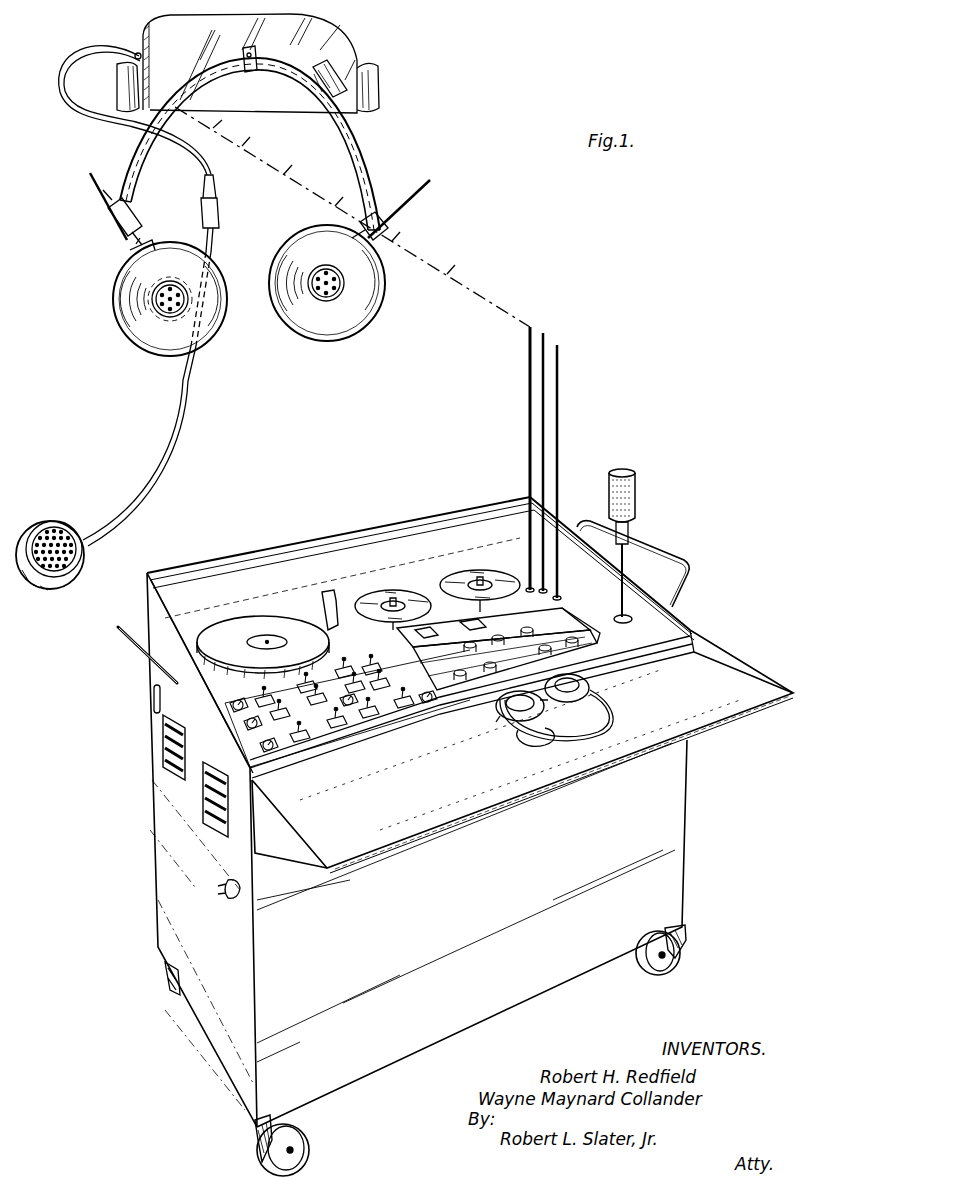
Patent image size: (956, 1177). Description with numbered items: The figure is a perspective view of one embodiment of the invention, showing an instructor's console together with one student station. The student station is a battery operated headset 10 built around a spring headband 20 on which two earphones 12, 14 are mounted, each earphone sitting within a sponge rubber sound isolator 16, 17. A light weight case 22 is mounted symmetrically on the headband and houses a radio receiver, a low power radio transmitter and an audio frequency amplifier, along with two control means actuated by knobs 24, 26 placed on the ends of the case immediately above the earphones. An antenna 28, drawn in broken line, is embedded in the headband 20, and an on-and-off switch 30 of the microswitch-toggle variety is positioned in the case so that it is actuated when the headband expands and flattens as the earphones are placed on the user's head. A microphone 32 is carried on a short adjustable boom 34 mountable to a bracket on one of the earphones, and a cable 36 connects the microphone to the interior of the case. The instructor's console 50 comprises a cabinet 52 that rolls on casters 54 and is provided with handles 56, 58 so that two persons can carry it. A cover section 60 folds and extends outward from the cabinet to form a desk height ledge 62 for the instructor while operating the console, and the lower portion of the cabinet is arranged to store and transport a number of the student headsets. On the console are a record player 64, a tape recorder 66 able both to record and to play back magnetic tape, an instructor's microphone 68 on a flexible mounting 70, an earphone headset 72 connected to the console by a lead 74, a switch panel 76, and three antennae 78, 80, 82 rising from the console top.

The headset 10 is at (398, 121).
The earphone 12 is at (160, 307).
The earphone 14 is at (320, 293).
The sponge rubber sound isolator 16 is at (113, 298).
The sponge rubber sound isolator 17 is at (372, 316).
The spring headband 20 is at (375, 170).
The case 22 is at (333, 67).
The knob 24 is at (118, 78).
The knob 26 is at (373, 80).
The antenna 28 is at (264, 84).
The on-and-off switch 30 is at (302, 96).
The microphone 32 is at (49, 586).
The adjustable boom 34 is at (157, 470).
The cable 36 is at (92, 123).
The instructor's console 50 is at (155, 838).
The cabinet 52 is at (410, 528).
The casters 54 is at (165, 990).
The handle 56 is at (128, 646).
The handle 58 is at (685, 558).
The cover section 60 is at (740, 672).
The ledge 62 is at (462, 818).
The record player 64 is at (272, 622).
The tape recorder 66 is at (435, 582).
The instructor's microphone 68 is at (637, 482).
The flexible mounting 70 is at (617, 604).
The earphone headset 72 is at (608, 697).
The lead 74 is at (522, 730).
The switch panel 76 is at (336, 745).
The antenna 78 is at (528, 357).
The antenna 80 is at (545, 338).
The antenna 82 is at (559, 367).